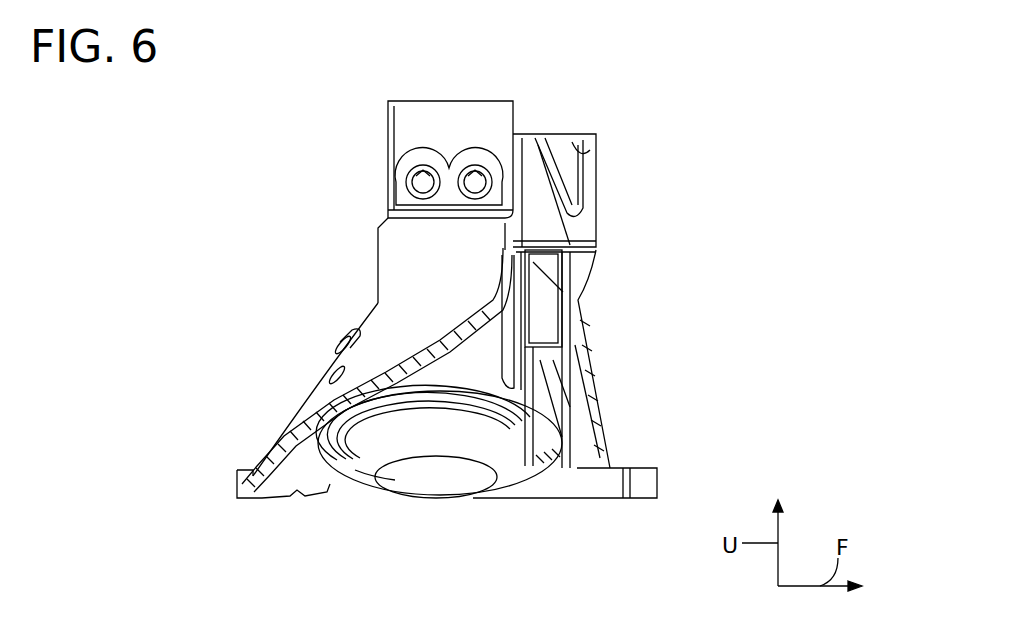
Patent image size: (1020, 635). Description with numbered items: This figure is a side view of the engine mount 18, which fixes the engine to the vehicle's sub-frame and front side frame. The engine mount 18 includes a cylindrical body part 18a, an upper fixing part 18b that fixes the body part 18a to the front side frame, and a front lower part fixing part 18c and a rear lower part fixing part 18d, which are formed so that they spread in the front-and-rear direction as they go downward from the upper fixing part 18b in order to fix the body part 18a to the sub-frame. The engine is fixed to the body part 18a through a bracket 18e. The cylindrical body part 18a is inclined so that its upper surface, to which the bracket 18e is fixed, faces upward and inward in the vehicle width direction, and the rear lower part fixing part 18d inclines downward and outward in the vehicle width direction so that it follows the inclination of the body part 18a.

The engine mount 18 is at (322, 234).
The cylindrical body part 18a is at (472, 342).
The upper fixing part 18b is at (597, 174).
The front lower part fixing part 18c is at (593, 393).
The rear lower part fixing part 18d is at (310, 386).
The bracket 18e is at (405, 100).